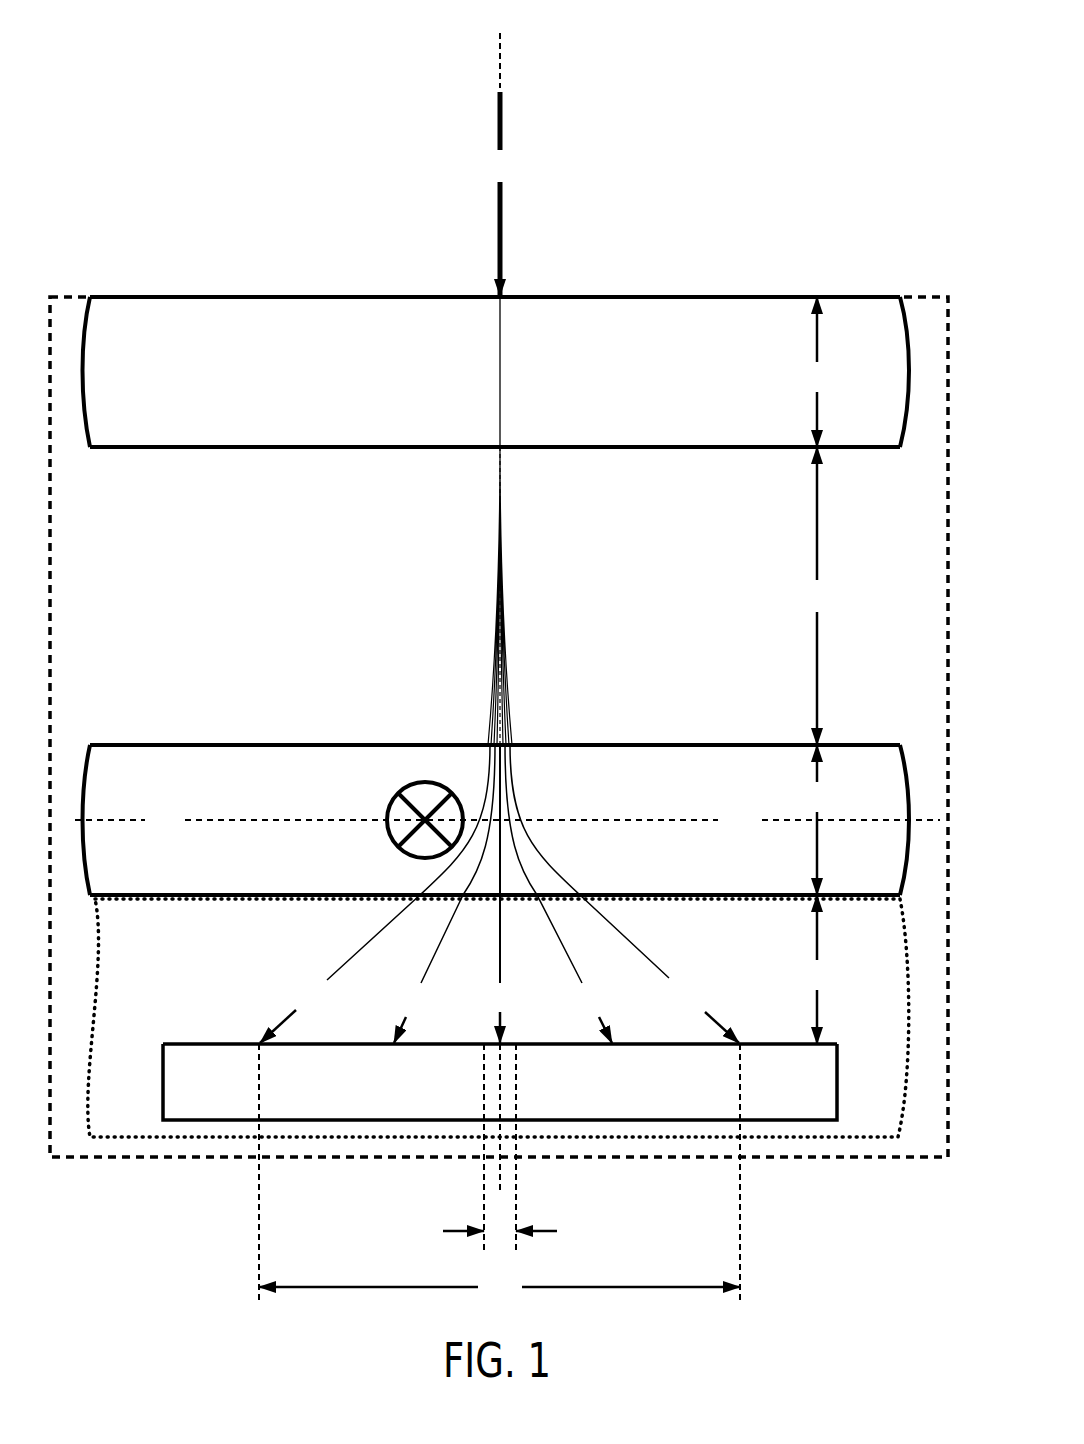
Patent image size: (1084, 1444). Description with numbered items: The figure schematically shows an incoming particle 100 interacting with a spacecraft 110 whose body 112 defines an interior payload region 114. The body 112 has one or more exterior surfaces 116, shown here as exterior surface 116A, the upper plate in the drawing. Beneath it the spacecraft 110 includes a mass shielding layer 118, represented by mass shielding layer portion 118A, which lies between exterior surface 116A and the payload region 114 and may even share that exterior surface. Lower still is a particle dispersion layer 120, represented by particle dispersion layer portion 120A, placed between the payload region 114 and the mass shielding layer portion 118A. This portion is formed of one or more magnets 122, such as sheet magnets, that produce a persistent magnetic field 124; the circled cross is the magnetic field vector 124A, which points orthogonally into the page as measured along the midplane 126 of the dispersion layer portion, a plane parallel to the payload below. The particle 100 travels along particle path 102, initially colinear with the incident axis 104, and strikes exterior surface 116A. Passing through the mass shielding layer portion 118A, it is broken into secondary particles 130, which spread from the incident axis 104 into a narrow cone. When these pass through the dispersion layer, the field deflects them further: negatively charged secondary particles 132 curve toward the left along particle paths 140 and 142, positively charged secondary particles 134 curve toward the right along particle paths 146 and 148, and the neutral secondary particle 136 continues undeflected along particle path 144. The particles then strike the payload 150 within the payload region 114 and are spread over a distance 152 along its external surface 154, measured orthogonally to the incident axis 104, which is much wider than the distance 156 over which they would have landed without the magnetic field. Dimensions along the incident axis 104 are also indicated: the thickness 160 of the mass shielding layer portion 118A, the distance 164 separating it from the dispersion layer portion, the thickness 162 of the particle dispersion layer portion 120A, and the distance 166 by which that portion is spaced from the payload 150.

The particle 100 is at (514, 120).
The particle path 102 is at (500, 225).
The incident axis 104 is at (546, 1190).
The spacecraft 110 is at (819, 174).
The body 112 is at (68, 297).
The interior payload region 114 is at (851, 1113).
The exterior surfaces 116 is at (496, 352).
The exterior surface 116A is at (668, 297).
The mass shielding layer 118 is at (384, 596).
The mass shielding layer portion 118A is at (158, 418).
The particle dispersion layer 120 is at (507, 758).
The particle dispersion layer portion 120A is at (160, 775).
The magnets 122 is at (330, 775).
The persistent magnetic field 124 is at (397, 752).
The magnetic field vector 124A is at (427, 782).
The midplane 126 is at (507, 820).
The secondary particles 130 is at (523, 495).
The negatively charged secondary particles 132 is at (361, 894).
The positively charged secondary particles 134 is at (639, 894).
The neutral secondary particle 136 is at (483, 1026).
The particle path 140 is at (375, 894).
The particle path 142 is at (443, 894).
The particle path 144 is at (502, 894).
The particle path 146 is at (558, 894).
The particle path 148 is at (737, 938).
The payload 150 is at (490, 1021).
The distance 152 is at (499, 1172).
The external surface 154 is at (222, 1044).
The distance 156 is at (500, 1230).
The thickness 160 is at (817, 372).
The thickness 162 is at (817, 820).
The distance 164 is at (817, 596).
The distance 166 is at (817, 969).